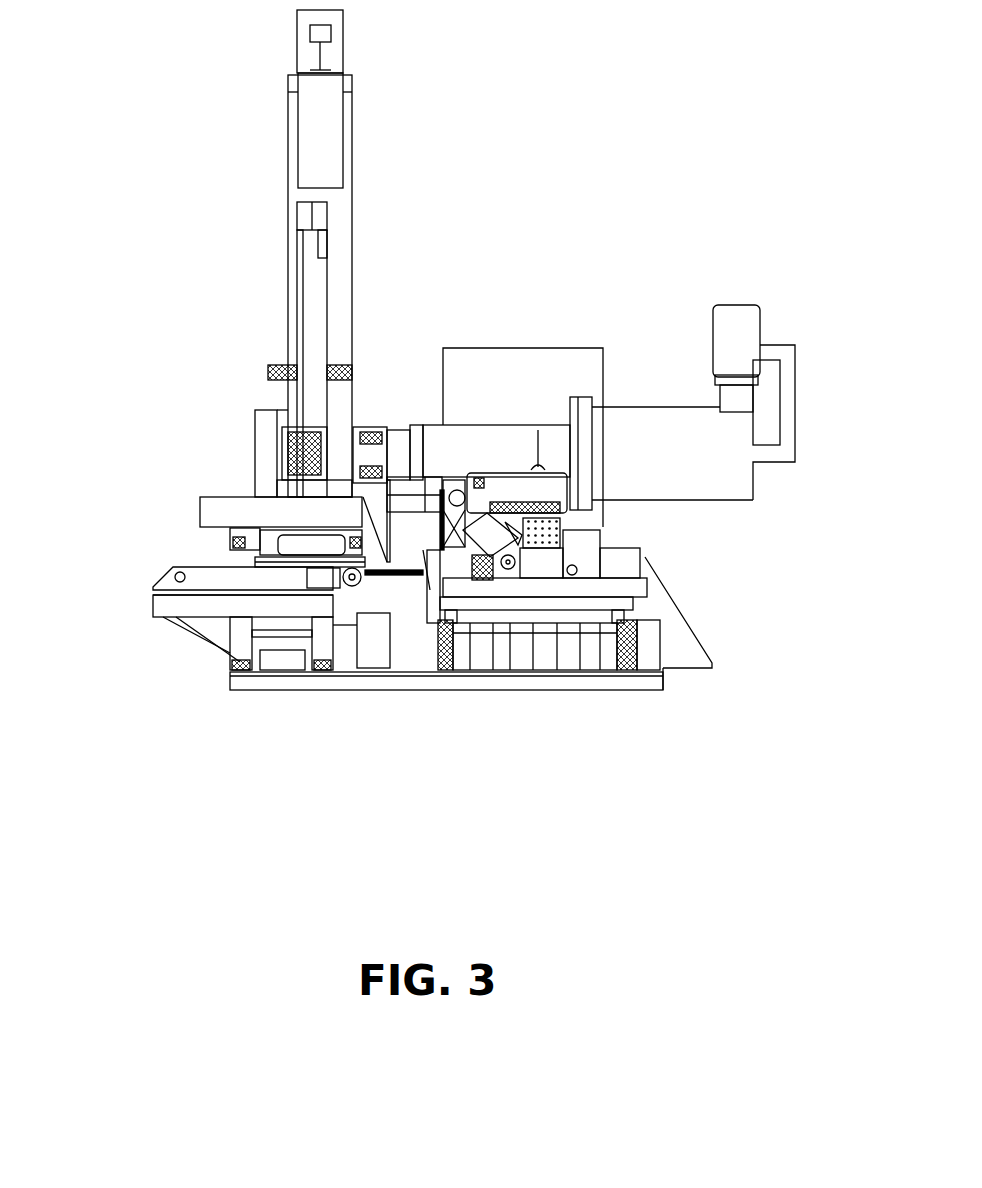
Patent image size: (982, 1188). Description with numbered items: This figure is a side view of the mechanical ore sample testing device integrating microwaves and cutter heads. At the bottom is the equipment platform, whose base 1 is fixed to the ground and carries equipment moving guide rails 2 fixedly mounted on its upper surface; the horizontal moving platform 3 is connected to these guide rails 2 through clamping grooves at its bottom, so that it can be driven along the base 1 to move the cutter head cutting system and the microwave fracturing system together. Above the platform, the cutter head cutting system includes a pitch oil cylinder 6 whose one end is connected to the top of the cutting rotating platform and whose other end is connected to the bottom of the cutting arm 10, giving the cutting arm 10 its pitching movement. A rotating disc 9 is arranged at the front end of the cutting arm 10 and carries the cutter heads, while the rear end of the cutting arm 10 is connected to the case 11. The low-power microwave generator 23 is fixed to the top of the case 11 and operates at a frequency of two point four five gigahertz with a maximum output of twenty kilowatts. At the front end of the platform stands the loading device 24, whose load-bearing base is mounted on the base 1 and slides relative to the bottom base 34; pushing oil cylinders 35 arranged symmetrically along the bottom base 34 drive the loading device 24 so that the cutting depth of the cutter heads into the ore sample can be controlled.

The base 1 is at (428, 650).
The equipment moving guide rails 2 is at (613, 640).
The horizontal moving platform 3 is at (487, 645).
The pitch oil cylinder 6 is at (570, 649).
The rotating disc 9 is at (390, 425).
The cutting arm 10 is at (480, 425).
The case 11 is at (630, 428).
The low-power microwave generator 23 is at (732, 350).
The loading device 24 is at (255, 448).
The bottom base 34 is at (237, 542).
The pushing oil cylinders 35 is at (223, 573).